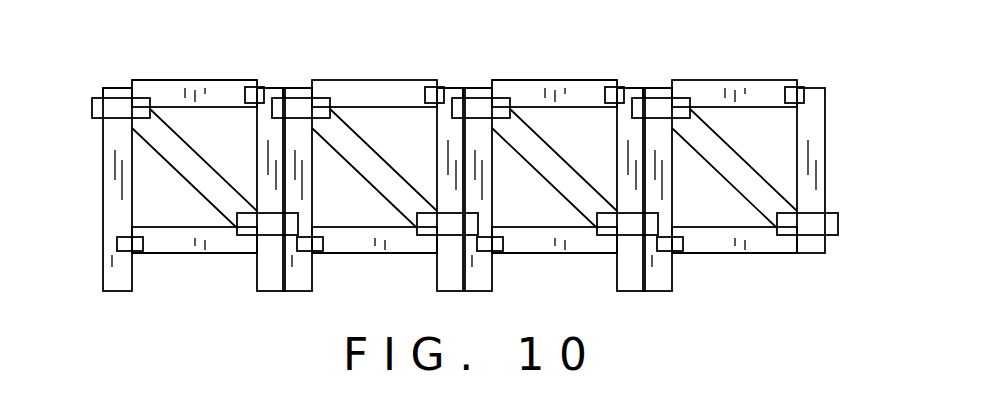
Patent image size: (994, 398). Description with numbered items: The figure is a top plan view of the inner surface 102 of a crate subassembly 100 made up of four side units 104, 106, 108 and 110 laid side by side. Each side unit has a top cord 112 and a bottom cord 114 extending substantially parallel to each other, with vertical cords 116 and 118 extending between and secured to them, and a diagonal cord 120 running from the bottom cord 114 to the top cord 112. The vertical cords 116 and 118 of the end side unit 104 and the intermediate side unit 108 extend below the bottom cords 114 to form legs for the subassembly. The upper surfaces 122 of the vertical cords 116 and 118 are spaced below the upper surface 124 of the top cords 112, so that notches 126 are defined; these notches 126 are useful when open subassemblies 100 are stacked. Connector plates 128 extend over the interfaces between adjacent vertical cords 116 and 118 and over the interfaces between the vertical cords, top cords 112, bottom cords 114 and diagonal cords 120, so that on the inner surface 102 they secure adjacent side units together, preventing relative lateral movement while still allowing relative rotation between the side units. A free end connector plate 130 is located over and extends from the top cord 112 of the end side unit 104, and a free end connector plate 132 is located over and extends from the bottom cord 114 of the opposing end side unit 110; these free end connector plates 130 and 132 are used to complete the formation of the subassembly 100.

The crate subassembly 100 is at (465, 166).
The inner surface 102 is at (156, 80).
The end side unit 104 is at (185, 270).
The side unit 106 is at (365, 270).
The intermediate side unit 108 is at (545, 270).
The opposing end side unit 110 is at (725, 270).
The top cord 112 is at (186, 82).
The bottom cord 114 is at (204, 254).
The vertical cord 116 is at (123, 162).
The vertical cord 118 is at (265, 170).
The diagonal cord 120 is at (217, 193).
The upper surface of vertical cord 122 is at (105, 86).
The upper surface of top cord 124 is at (217, 79).
The notch 126 is at (118, 76).
The connector plate 128 is at (254, 104).
The free end connector plate 130 is at (95, 114).
The free end connector plate 132 is at (838, 222).